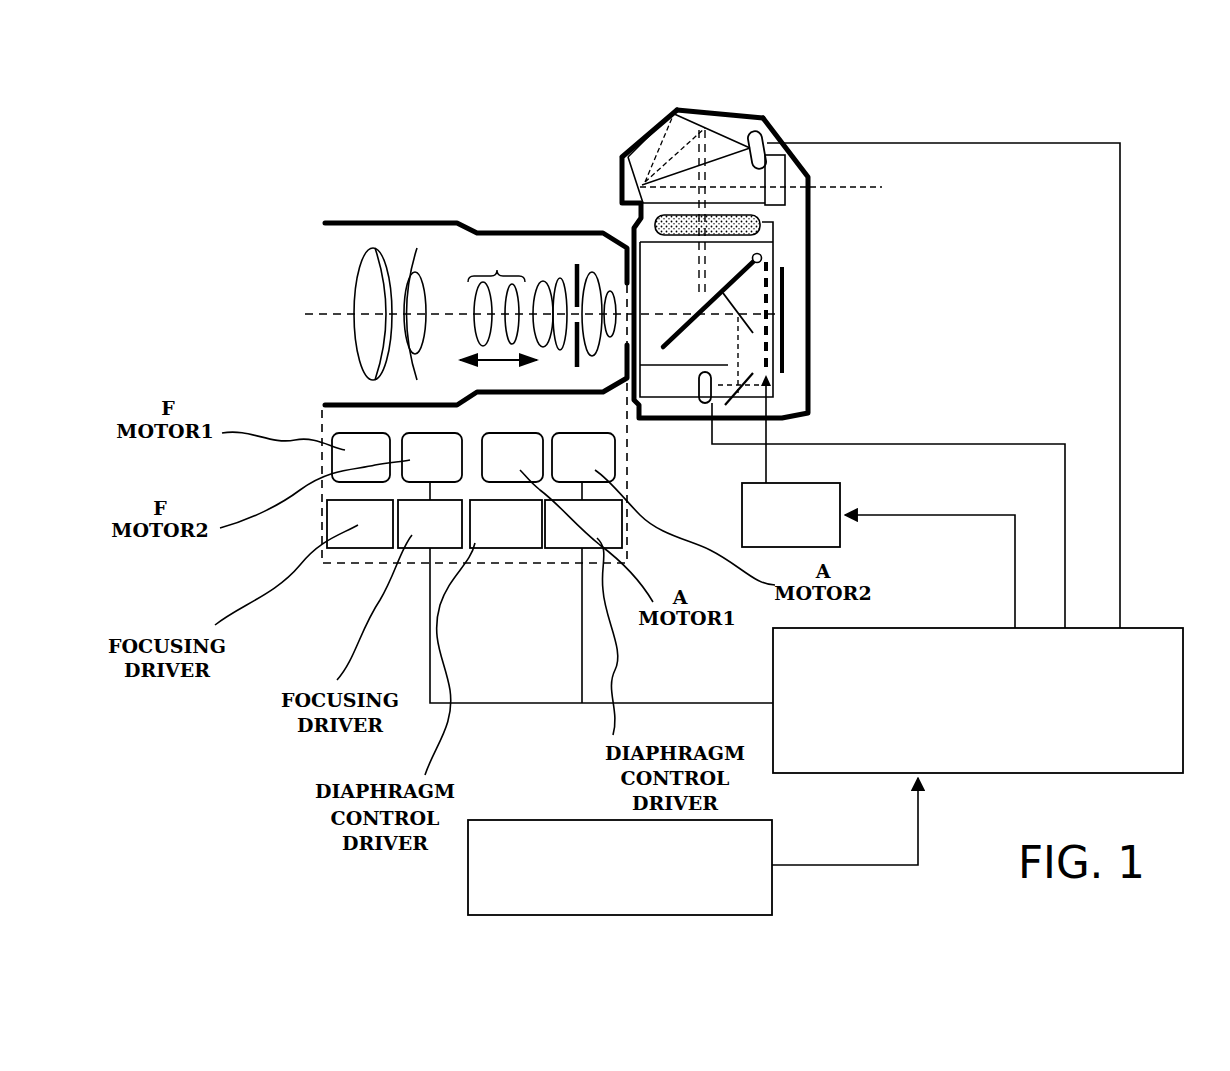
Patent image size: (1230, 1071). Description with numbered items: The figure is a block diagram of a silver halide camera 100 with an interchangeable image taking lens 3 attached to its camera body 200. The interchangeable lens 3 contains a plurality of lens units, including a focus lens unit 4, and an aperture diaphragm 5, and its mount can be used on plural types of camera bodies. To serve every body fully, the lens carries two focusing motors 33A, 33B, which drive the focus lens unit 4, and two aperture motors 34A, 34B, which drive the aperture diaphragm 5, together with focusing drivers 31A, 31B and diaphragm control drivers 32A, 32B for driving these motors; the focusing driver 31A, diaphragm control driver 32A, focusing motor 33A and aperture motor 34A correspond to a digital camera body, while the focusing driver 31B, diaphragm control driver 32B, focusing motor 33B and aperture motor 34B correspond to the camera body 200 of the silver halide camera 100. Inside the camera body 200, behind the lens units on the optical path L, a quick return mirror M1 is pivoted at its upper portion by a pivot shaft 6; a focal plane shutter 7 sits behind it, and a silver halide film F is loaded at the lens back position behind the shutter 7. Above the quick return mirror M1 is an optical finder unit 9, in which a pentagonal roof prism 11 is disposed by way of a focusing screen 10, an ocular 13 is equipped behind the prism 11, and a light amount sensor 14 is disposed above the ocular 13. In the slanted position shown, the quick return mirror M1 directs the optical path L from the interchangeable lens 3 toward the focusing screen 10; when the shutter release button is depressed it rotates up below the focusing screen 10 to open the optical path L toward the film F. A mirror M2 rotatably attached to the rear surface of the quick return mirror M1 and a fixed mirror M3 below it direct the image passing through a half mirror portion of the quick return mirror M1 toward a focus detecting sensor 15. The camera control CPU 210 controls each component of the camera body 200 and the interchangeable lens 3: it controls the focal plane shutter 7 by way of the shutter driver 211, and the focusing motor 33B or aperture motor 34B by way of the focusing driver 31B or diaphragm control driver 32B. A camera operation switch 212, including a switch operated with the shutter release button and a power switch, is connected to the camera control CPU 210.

The silver halide camera 100 is at (637, 120).
The optical path L is at (340, 312).
The interchangeable image taking lens 3 is at (440, 216).
The focus lens unit 4 is at (497, 270).
The aperture diaphragm 5 is at (574, 270).
The camera body 200 is at (836, 335).
The optical finder unit 9 is at (722, 110).
The pentagonal roof prism 11 is at (668, 138).
The ocular 13 is at (780, 166).
The light amount sensor 14 is at (757, 132).
The focusing screen 10 is at (634, 227).
The pivot shaft 6 is at (780, 270).
The quick return mirror M1 is at (737, 283).
The mirror M2 is at (737, 305).
The focal plane shutter 7 is at (768, 352).
The silver halide film F is at (784, 334).
The fixed mirror M3 is at (731, 388).
The focus detecting sensor 15 is at (705, 404).
The focusing motor 33A is at (350, 432).
The focusing motor 33B is at (437, 433).
The aperture motor 34A is at (517, 433).
The aperture motor 34B is at (615, 457).
The focusing driver 31A is at (348, 552).
The focusing driver 31B is at (410, 550).
The diaphragm control driver 32A is at (488, 552).
The diaphragm control driver 32B is at (562, 552).
The shutter driver 211 is at (842, 498).
The camera control CPU 210 is at (1150, 628).
The camera operation switch 212 is at (540, 819).